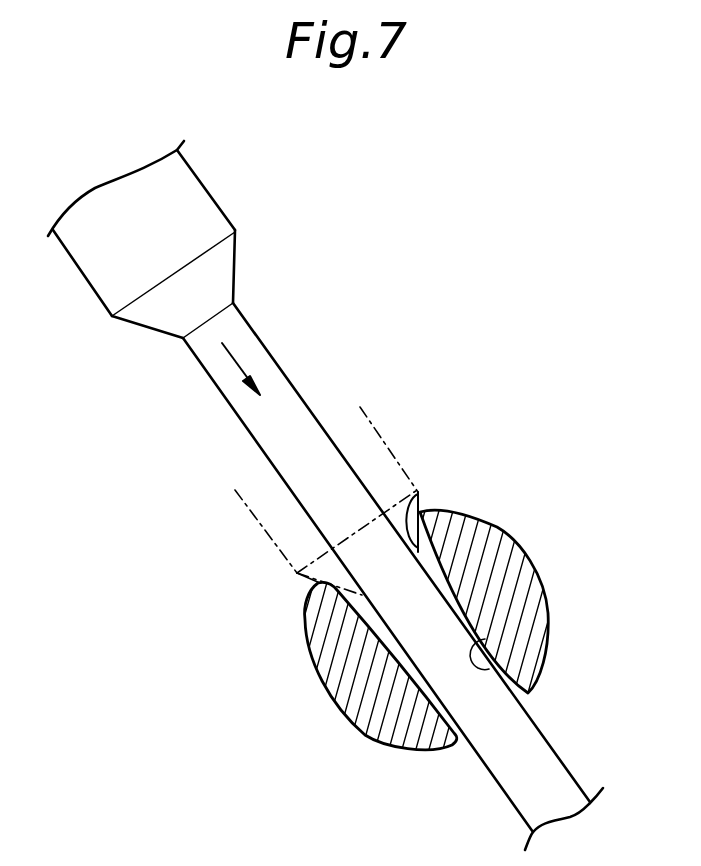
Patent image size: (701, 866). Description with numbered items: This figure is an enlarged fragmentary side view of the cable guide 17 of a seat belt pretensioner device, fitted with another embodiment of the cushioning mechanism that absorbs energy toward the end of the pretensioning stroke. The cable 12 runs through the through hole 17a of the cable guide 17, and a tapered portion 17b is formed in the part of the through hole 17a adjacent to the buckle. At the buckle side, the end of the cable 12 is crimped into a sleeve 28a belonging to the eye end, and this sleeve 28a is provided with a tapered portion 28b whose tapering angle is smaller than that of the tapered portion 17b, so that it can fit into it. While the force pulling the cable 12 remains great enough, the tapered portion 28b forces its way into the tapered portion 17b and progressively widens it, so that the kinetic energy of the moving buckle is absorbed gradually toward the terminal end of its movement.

The cable 12 is at (297, 403).
The cable guide 17 is at (495, 528).
The through hole 17a is at (497, 670).
The tapered portion 17b is at (423, 495).
The sleeve 28a is at (200, 193).
The tapered portion 28b is at (230, 275).